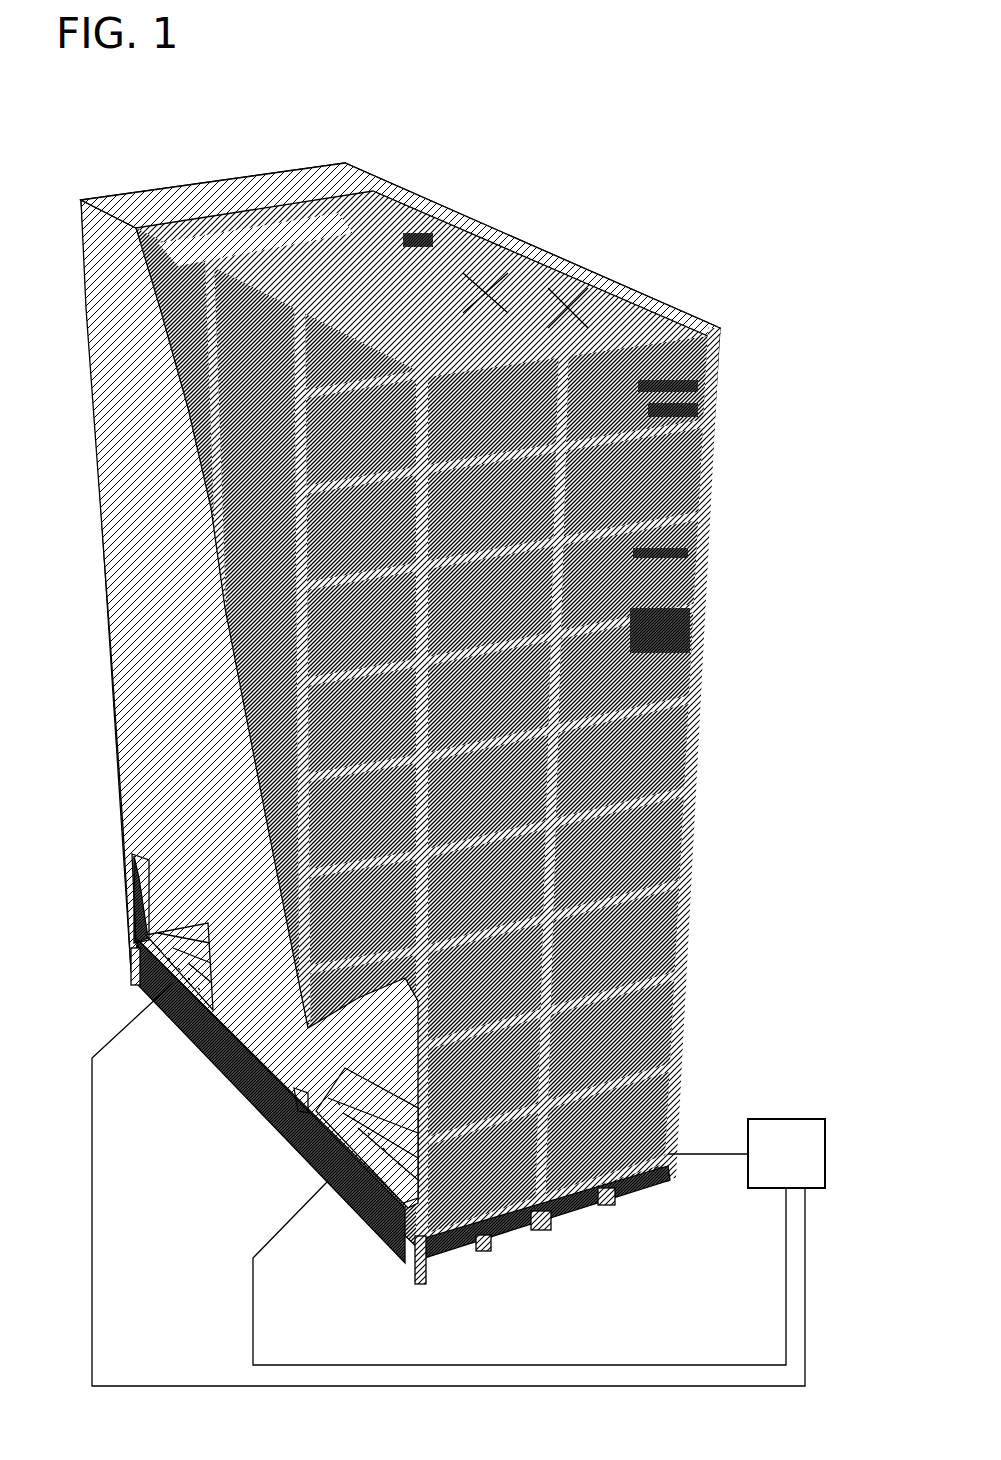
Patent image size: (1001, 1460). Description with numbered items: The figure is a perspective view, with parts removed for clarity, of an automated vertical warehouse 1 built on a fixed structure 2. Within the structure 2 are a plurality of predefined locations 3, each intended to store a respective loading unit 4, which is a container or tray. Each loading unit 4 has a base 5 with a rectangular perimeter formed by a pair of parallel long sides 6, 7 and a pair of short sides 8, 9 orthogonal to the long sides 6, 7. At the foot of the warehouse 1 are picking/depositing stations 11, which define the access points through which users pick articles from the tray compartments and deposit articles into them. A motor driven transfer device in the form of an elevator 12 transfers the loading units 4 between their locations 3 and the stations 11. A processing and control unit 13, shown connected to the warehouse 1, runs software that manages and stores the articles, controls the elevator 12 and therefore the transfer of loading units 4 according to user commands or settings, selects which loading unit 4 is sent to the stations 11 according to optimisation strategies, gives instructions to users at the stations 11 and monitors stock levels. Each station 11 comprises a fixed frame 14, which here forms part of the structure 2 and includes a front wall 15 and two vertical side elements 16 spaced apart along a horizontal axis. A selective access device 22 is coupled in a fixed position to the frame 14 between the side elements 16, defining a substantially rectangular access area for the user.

The automated vertical warehouse 1 is at (594, 177).
The fixed structure 2 is at (597, 1185).
The predefined locations 3 is at (656, 800).
The loading unit 4 is at (402, 233).
The base 5 is at (653, 407).
The long side 6 is at (255, 222).
The long side 7 is at (388, 215).
The short side 8 is at (300, 215).
The short side 9 is at (458, 205).
The picking/depositing station 11 is at (130, 977).
The elevator 12 is at (562, 1205).
The processing and control unit 13 is at (779, 1112).
The fixed frame 14 is at (118, 882).
The front wall 15 is at (172, 1018).
The vertical side elements 16 is at (114, 920).
The selective access device 22 is at (177, 1018).